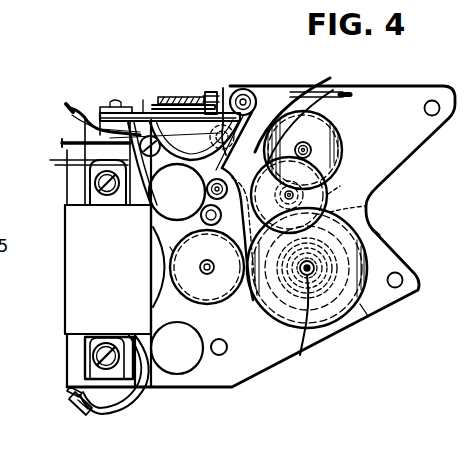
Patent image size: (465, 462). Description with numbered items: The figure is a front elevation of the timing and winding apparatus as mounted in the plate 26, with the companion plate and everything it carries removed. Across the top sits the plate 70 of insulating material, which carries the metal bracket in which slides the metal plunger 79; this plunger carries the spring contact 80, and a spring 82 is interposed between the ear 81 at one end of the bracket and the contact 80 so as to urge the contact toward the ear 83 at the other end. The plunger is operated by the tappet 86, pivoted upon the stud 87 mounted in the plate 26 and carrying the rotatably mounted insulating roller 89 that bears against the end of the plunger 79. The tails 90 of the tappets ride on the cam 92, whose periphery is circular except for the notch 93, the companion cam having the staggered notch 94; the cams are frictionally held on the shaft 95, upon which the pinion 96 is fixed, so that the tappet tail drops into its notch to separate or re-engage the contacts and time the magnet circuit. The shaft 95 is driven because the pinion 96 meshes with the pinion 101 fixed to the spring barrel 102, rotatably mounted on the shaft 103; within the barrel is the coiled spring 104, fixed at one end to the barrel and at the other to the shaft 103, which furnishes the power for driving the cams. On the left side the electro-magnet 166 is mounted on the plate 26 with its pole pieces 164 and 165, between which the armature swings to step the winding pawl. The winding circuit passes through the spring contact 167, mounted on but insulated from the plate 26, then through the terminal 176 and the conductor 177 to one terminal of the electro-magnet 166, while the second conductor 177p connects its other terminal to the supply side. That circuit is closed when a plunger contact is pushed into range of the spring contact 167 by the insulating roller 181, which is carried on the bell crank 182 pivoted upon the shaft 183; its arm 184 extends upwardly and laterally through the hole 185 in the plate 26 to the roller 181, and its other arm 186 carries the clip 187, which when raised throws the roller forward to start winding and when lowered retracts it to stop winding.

The plate 26 is at (404, 153).
The plate of insulating material 70 is at (100, 110).
The metal plunger 79 is at (143, 100).
The spring contact 80 is at (204, 104).
The ear 81 is at (172, 98).
The spring 82 is at (180, 96).
The ear 83 is at (223, 90).
The tappet 86 is at (268, 139).
The stud 87 is at (206, 190).
The insulating roller 89 is at (250, 90).
The tails 90 is at (234, 234).
The cam 92 is at (172, 250).
The notch 93 is at (235, 306).
The notch 94 is at (217, 339).
The shaft 95 is at (201, 270).
The pinion 96 is at (177, 348).
The pinion 101 is at (368, 261).
The spring barrel 102 is at (364, 310).
The shaft 103 is at (300, 352).
The coiled spring 104 is at (381, 232).
The pole piece 164 is at (90, 190).
The pole piece 165 is at (86, 358).
The electro-magnet 166 is at (66, 258).
The spring contact 167 is at (70, 390).
The terminal 176 is at (78, 410).
The conductor 177 is at (136, 402).
The conductor 177p is at (54, 161).
The insulating roller 181 is at (236, 82).
The bell crank 182 is at (285, 194).
The shaft 183 is at (201, 217).
The arm 184 is at (289, 195).
The hole 185 is at (274, 110).
The arm 186 is at (330, 194).
The clip 187 is at (367, 206).